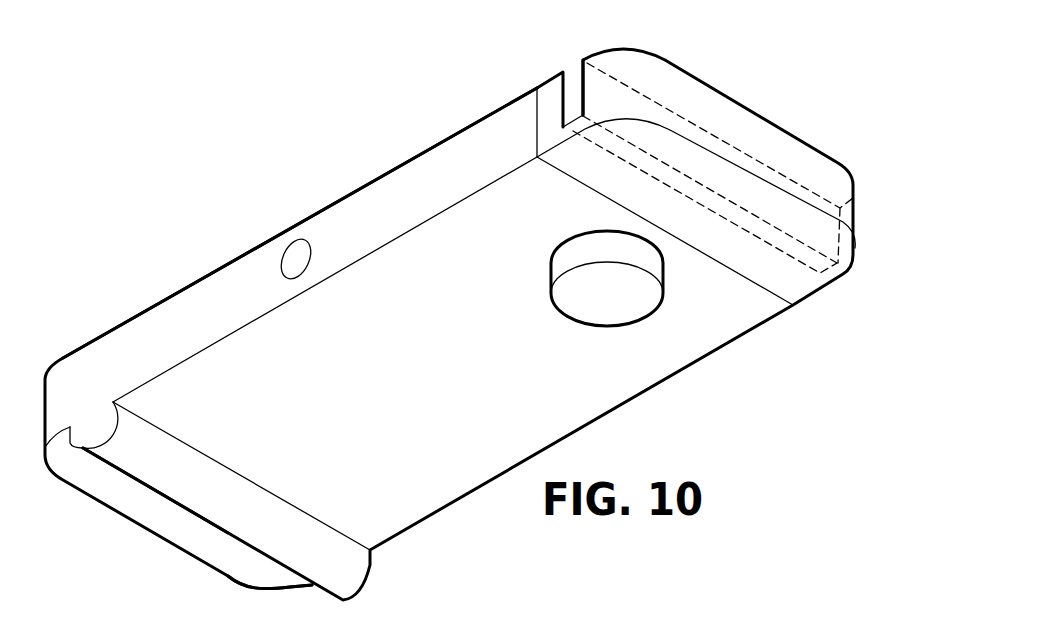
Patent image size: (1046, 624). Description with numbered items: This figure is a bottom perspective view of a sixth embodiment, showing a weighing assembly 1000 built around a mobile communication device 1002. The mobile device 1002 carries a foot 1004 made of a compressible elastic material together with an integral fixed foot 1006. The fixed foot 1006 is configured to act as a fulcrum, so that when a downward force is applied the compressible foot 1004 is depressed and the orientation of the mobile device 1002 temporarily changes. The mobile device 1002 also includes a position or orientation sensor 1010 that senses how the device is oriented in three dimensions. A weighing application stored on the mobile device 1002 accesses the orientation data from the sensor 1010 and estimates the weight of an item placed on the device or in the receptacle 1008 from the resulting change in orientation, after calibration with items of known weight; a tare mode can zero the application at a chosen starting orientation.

The weighing assembly 1000 is at (330, 172).
The mobile communication device 1002 is at (196, 278).
The foot 1004 is at (552, 285).
The integral fixed foot 1006 is at (358, 590).
The receptacle 1008 is at (583, 60).
The orientation sensor 1010 is at (288, 247).